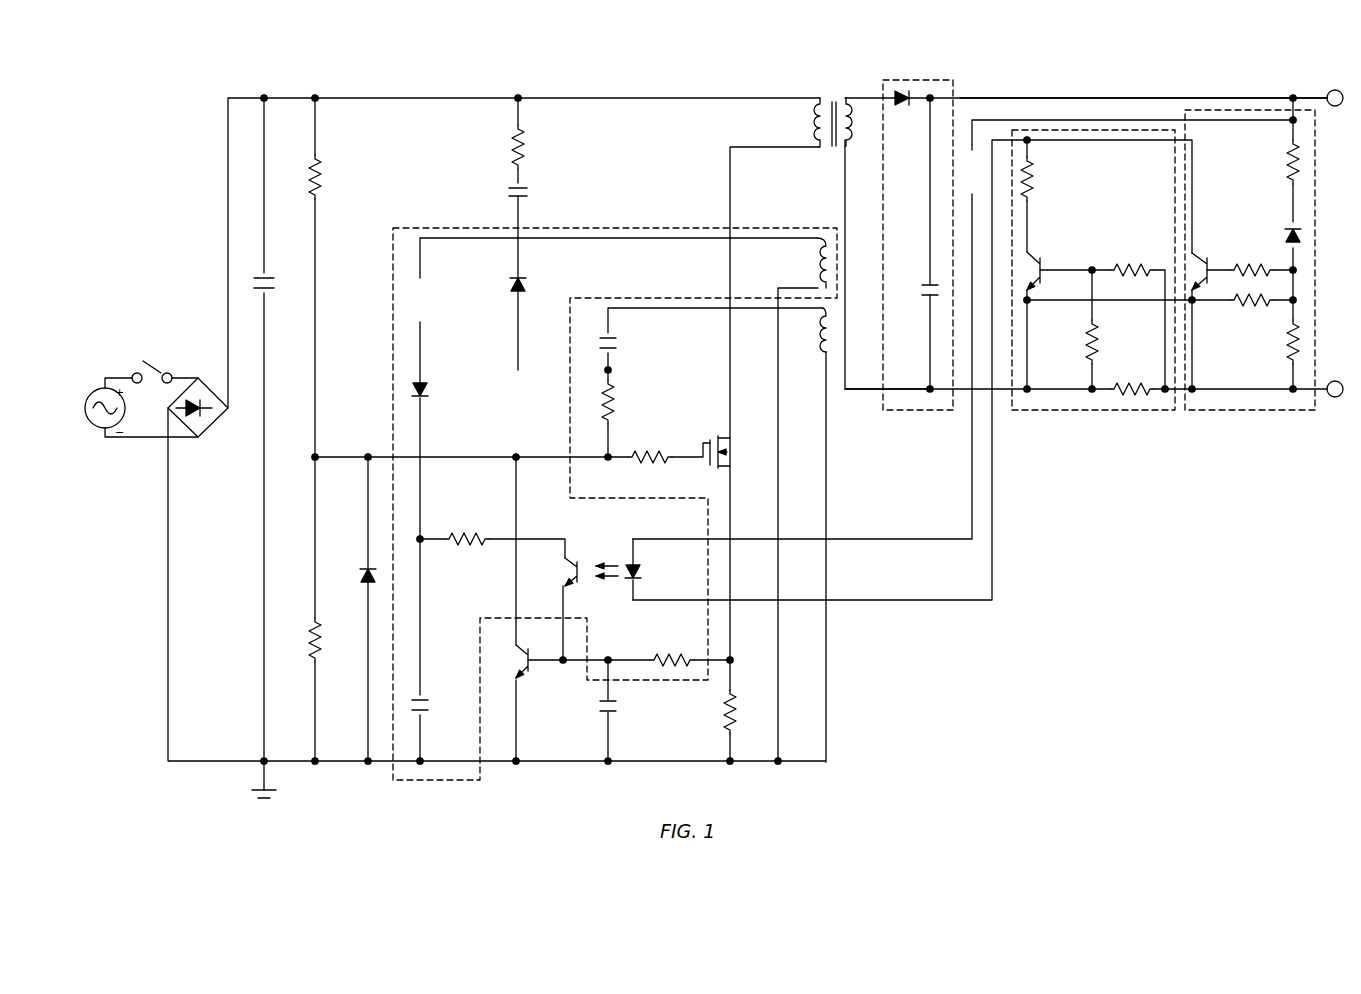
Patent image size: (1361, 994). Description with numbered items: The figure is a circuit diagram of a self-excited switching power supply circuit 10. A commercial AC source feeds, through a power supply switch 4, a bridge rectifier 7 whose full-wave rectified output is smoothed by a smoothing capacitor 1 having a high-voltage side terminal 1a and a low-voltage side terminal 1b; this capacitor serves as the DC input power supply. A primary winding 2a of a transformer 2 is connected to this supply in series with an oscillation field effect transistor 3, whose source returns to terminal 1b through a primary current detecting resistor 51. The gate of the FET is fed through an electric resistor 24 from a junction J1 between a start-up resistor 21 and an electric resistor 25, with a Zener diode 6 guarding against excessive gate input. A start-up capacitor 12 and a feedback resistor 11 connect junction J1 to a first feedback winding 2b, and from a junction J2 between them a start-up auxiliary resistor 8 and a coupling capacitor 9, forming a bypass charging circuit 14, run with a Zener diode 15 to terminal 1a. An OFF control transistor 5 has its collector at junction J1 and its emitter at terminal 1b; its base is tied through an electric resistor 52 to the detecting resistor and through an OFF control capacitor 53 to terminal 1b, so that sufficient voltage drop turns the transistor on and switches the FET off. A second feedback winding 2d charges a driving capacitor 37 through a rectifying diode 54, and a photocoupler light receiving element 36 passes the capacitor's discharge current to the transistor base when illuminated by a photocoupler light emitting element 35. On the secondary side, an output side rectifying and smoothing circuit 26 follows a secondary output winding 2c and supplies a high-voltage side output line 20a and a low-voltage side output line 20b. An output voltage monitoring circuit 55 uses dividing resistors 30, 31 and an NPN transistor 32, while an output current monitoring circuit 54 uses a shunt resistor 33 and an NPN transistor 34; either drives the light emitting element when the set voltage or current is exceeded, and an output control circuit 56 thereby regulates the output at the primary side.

The smoothing capacitor 1 is at (225, 272).
The high-voltage side terminal 1a is at (221, 264).
The low-voltage side terminal 1b is at (221, 283).
The transformer 2 is at (818, 227).
The primary winding 2a is at (820, 102).
The first feedback winding 2b is at (824, 352).
The secondary output winding 2c is at (846, 102).
The second feedback winding 2d is at (822, 244).
The oscillation field effect transistor 3 is at (729, 452).
The power supply switch 4 is at (146, 361).
The OFF control transistor 5 is at (513, 662).
The Zener diode 6 is at (358, 609).
The bridge rectifier 7 is at (207, 432).
The start-up auxiliary resistor 8 is at (523, 150).
The coupling capacitor 9 is at (524, 186).
The self-excited switching power supply circuit 10 is at (1082, 709).
The feedback resistor 11 is at (623, 402).
The start-up capacitor 12 is at (623, 341).
The bypass charging circuit 14 is at (578, 146).
The Zener diode 15 is at (533, 286).
The high-voltage side output line 20a is at (1130, 97).
The low-voltage side output line 20b is at (903, 392).
The start-up resistor 21 is at (331, 177).
The electric resistor 24 is at (650, 469).
The electric resistor 25 is at (331, 640).
The output side rectifying and smoothing circuit 26 is at (955, 82).
The voltage dividing resistor 30 is at (1286, 155).
The voltage dividing resistor 31 is at (1290, 348).
The NPN transistor 32 is at (1200, 262).
The shunt resistor 33 is at (1145, 395).
The NPN transistor 34 is at (1039, 224).
The photocoupler light emitting element 35 is at (648, 569).
The photocoupler light receiving element 36 is at (576, 609).
The driving capacitor 37 is at (435, 707).
The primary current detecting resistor 51 is at (745, 712).
The electric resistor 52 is at (672, 648).
The OFF control capacitor 53 is at (623, 709).
The rectifying diode / output current monitoring circuit 54 is at (1091, 446).
The output voltage monitoring circuit 55 is at (1245, 412).
The output control circuit 56 is at (479, 780).
The junction J1 is at (318, 452).
The junction J2 is at (613, 371).